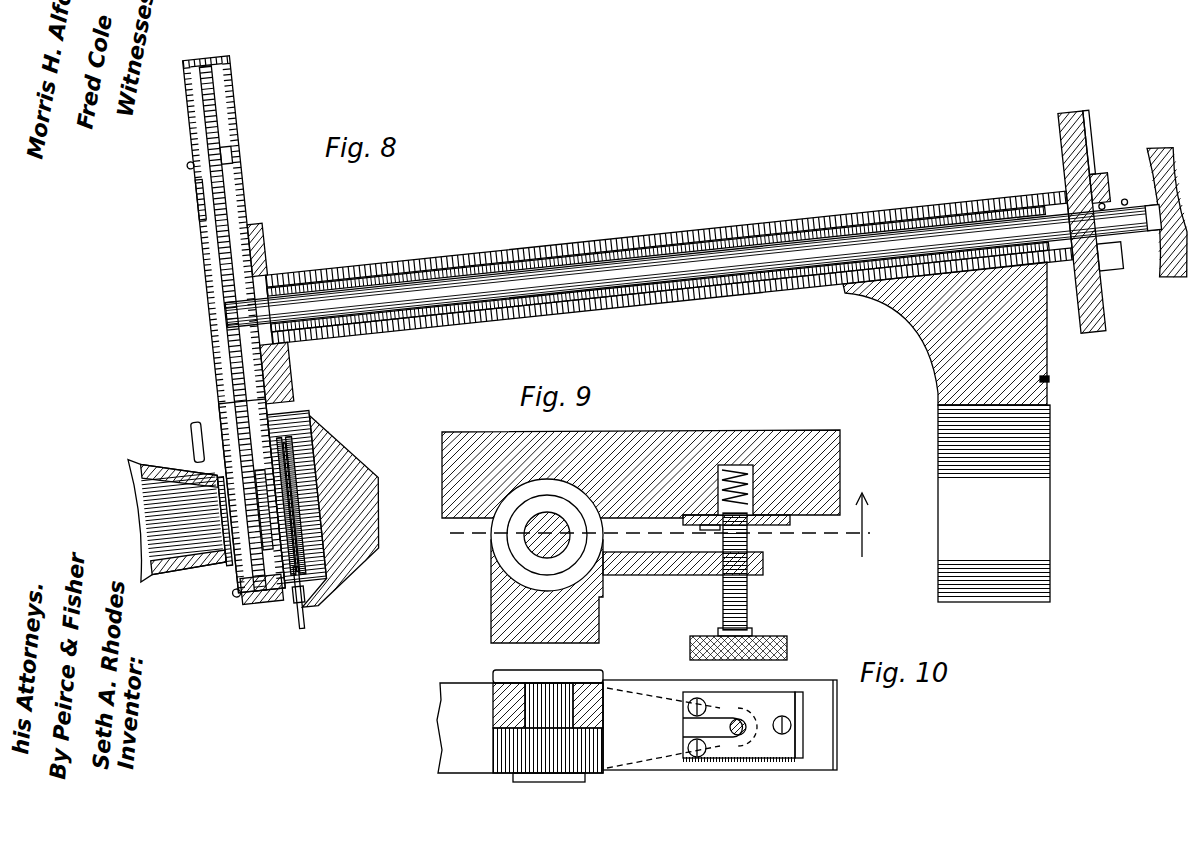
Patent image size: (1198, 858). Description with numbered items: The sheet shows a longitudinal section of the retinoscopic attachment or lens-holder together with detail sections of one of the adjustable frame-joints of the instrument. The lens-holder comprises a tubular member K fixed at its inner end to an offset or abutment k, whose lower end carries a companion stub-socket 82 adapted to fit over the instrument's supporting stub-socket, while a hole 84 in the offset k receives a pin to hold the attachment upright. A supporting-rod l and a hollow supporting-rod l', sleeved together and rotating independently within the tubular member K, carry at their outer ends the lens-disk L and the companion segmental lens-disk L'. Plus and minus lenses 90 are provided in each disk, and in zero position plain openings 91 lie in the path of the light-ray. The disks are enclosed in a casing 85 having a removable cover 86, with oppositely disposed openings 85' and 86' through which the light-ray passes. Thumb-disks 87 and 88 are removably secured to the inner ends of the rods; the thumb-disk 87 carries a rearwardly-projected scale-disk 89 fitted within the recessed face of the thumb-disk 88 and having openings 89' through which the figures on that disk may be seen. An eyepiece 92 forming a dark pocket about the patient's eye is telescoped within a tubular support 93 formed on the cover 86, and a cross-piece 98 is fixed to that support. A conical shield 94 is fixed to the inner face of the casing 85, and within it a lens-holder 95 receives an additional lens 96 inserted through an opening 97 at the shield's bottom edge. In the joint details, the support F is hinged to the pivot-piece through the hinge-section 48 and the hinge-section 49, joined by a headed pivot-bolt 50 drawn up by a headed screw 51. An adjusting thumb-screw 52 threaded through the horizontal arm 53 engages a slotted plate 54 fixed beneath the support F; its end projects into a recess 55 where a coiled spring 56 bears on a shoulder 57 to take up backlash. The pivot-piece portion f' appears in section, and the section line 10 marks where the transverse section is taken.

In FIG. 8, the lens-disk L is at (217, 325).
In FIG. 8, the plus and minus lenses 90 is at (212, 105).
In FIG. 8, the cover 86 is at (174, 201).
In FIG. 8, the casing 85 is at (260, 273).
In FIG. 8, the tubular member K is at (548, 242).
In FIG. 8, the supporting-rod l is at (658, 264).
In FIG. 8, the hollow supporting-rod l' is at (691, 260).
In FIG. 8, the thumb-disk 88 is at (1062, 145).
In FIG. 8, the openings 89' is at (1112, 140).
In FIG. 8, the scale-disk 89 is at (1115, 174).
In FIG. 8, the thumb-disk 87 is at (1158, 150).
In FIG. 8, the offset or abutment k is at (937, 317).
In FIG. 8, the hole 84 is at (1052, 378).
In FIG. 8, the companion stub-socket 82 is at (994, 503).
In FIG. 8, the segmental lens-disk L' is at (226, 480).
In FIG. 8, the cross-piece 98 is at (190, 438).
In FIG. 8, the conical shield 94 is at (330, 427).
In FIG. 8, the opening 85' is at (346, 501).
In FIG. 8, the additional lens 96 is at (293, 515).
In FIG. 8, the lens-holder 95 is at (283, 545).
In FIG. 8, the plain openings 91 is at (272, 525).
In FIG. 8, the eyepiece 92 is at (130, 486).
In FIG. 8, the tubular support 93 is at (200, 570).
In FIG. 8, the opening 86' is at (240, 589).
In FIG. 8, the opening 97 is at (310, 605).
In FIG. 9, the supporting-arm F is at (607, 443).
In FIG. 10, the supporting-arm F is at (827, 723).
In FIG. 9, the bracket f' is at (524, 591).
In FIG. 9, the hinge-section 49 is at (507, 550).
In FIG. 10, the hinge-section 49 is at (493, 745).
In FIG. 9, the headed pivot-bolt 50 is at (533, 550).
In FIG. 10, the headed pivot-bolt 50 is at (550, 683).
In FIG. 9, the horizontal arm 53 is at (673, 570).
In FIG. 9, the plate 54 is at (770, 523).
In FIG. 10, the plate 54 is at (778, 697).
In FIG. 9, the shoulder 57 is at (717, 517).
In FIG. 9, the recess 55 is at (780, 470).
In FIG. 9, the coiled spring 56 is at (730, 467).
In FIG. 9, the adjusting thumb-screw 52 is at (753, 588).
In FIG. 10, the adjusting thumb-screw 52 is at (740, 717).
In FIG. 9, the section line 10 is at (656, 525).
In FIG. 10, the hinge-section 48 is at (500, 685).
In FIG. 10, the headed screw 51 is at (567, 778).